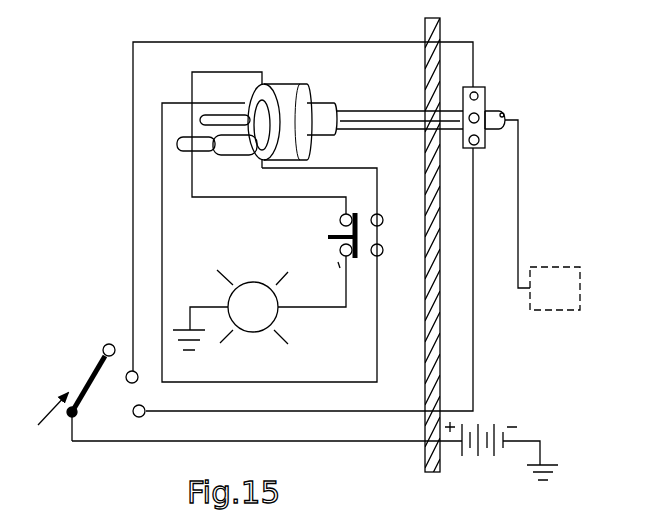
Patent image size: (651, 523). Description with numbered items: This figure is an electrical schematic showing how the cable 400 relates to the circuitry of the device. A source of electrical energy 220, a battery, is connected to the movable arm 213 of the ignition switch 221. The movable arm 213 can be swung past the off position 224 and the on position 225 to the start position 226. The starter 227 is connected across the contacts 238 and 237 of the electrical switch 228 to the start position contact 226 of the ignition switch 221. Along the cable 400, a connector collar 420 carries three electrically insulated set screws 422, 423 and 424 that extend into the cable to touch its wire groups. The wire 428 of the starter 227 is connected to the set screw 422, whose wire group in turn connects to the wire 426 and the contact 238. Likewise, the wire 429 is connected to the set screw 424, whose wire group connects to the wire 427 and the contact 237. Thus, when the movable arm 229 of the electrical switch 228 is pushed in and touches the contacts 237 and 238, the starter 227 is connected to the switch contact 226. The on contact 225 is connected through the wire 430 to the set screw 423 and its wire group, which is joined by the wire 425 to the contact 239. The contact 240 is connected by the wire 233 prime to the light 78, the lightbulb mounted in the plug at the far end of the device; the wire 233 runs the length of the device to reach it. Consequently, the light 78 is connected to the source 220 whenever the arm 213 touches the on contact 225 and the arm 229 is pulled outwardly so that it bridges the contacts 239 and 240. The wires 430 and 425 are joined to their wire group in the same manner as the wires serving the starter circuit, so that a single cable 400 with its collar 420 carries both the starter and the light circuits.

The light 78 is at (244, 285).
The movable arm 213 is at (87, 367).
The source of electrical energy 220 is at (463, 458).
The ignition switch 221 is at (40, 422).
The off position 224 is at (103, 348).
The on position 225 is at (127, 381).
The start position 226 is at (141, 405).
The starter 227 is at (567, 312).
The electrical switch 228 is at (357, 270).
The movable arm 229 is at (313, 234).
The wire 233 is at (346, 288).
The contact 237 is at (381, 256).
The contact 238 is at (378, 214).
The contact 239 is at (343, 219).
The contact 240 is at (340, 253).
The cable 400 is at (365, 111).
The connector collar 420 is at (487, 107).
The set screw 422 is at (485, 116).
The set screw 423 is at (475, 88).
The set screw 424 is at (485, 146).
The wire 425 is at (218, 71).
The wire 426 is at (350, 168).
The wire 427 is at (200, 102).
The wire 428 is at (518, 229).
The wire 429 is at (473, 355).
The wire 430 is at (337, 42).